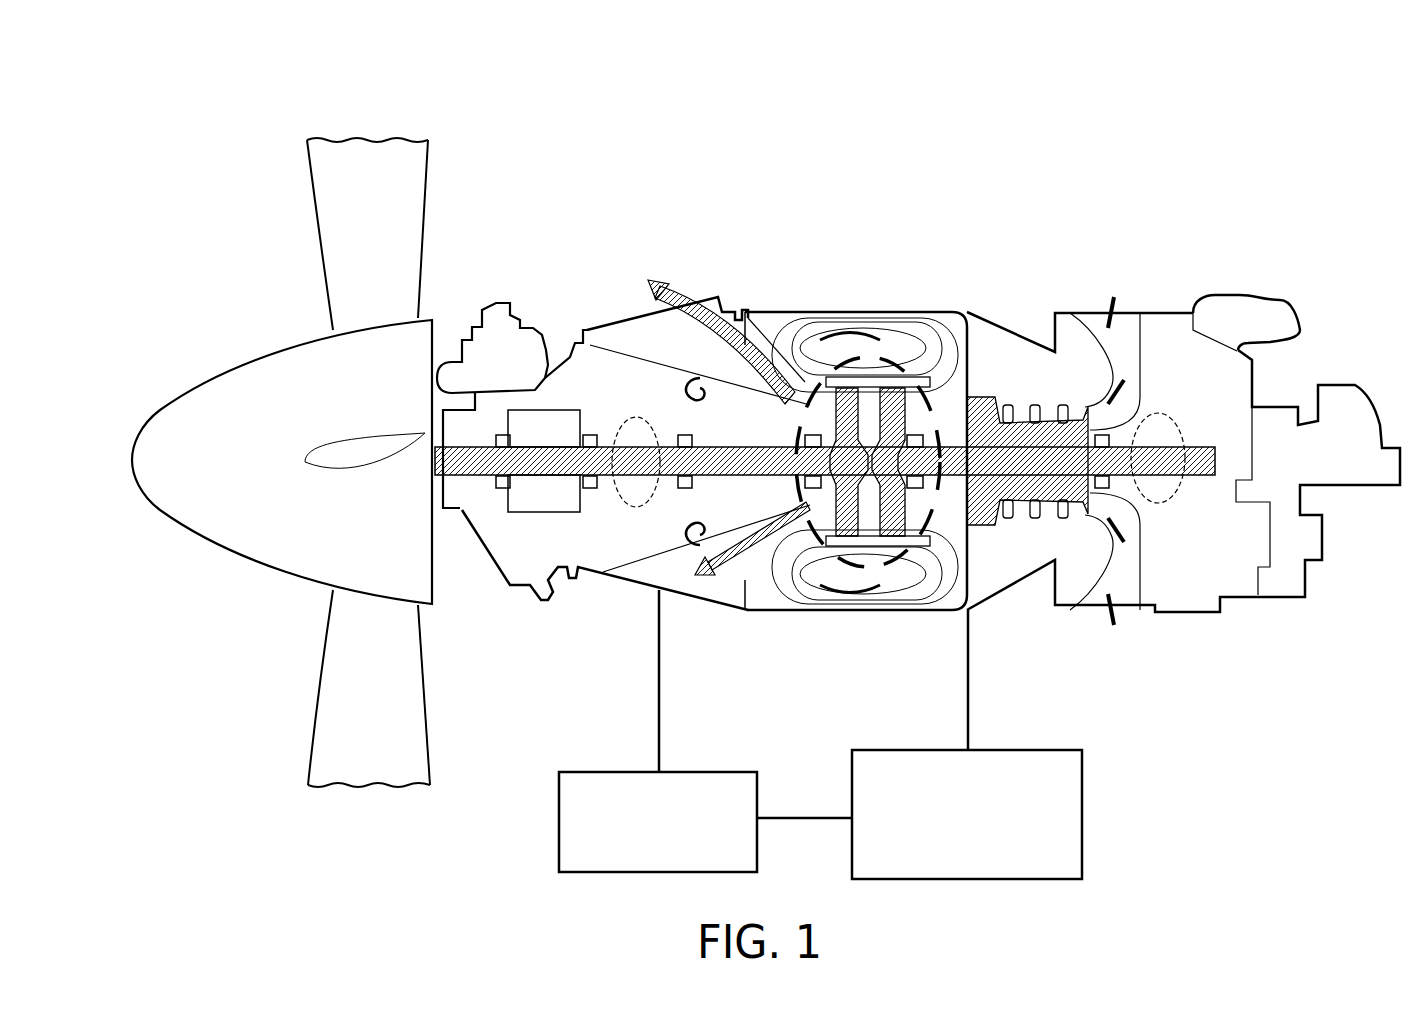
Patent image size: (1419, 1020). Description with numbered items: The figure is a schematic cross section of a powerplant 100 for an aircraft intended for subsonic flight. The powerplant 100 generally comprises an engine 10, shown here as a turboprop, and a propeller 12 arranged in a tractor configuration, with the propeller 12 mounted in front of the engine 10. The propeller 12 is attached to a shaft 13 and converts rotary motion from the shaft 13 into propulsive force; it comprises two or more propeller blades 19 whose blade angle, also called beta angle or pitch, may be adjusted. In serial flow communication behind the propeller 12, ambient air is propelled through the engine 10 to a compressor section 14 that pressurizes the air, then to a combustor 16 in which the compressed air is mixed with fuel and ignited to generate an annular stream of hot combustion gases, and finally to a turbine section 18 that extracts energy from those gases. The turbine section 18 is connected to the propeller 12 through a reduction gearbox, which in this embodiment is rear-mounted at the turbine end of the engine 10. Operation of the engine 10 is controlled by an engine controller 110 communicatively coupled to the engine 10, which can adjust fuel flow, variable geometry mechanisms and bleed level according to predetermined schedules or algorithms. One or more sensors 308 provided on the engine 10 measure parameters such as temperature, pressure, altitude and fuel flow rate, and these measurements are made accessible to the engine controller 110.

The powerplant 100 is at (766, 460).
The engine 10 is at (917, 443).
The propeller 12 is at (340, 415).
The shaft 13 is at (462, 470).
The compressor section 14 is at (1012, 523).
The combustor 16 is at (888, 342).
The turbine section 18 is at (800, 493).
The propeller blades 19 is at (427, 462).
The sensors 308 is at (633, 858).
The engine controller 110 is at (942, 867).